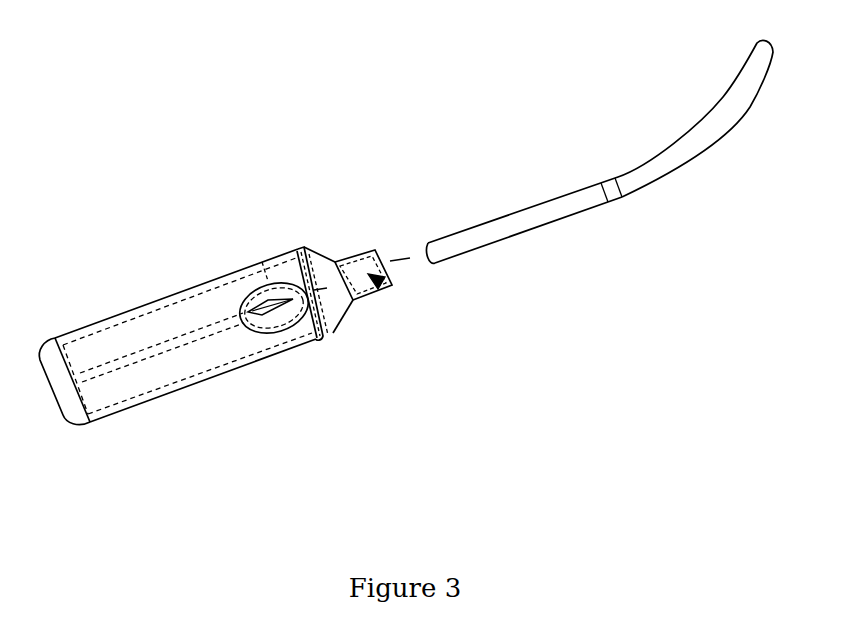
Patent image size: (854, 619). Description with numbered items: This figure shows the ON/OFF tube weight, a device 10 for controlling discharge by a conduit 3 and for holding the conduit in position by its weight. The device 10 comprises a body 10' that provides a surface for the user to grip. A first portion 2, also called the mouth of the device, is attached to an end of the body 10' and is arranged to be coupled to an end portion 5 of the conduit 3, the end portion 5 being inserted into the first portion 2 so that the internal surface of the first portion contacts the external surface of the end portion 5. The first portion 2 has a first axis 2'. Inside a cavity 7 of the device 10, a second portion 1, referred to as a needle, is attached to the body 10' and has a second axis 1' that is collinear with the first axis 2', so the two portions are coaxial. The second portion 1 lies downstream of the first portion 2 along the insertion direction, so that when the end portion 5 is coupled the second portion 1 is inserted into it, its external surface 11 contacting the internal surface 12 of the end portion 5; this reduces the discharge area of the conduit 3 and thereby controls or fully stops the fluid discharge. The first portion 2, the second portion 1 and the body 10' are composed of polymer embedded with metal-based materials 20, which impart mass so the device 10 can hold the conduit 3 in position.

The second portion 1 is at (259, 365).
The second axis 1' is at (332, 309).
The first portion 2 is at (404, 292).
The first axis 2' is at (357, 250).
The conduit 3 is at (498, 215).
The end portion 5 is at (460, 257).
The cavity 7 is at (283, 327).
The device 10 is at (185, 335).
The body 10' is at (107, 409).
The external surface 11 is at (252, 296).
The internal surface 12 is at (423, 247).
The metal-based materials 20 is at (83, 330).